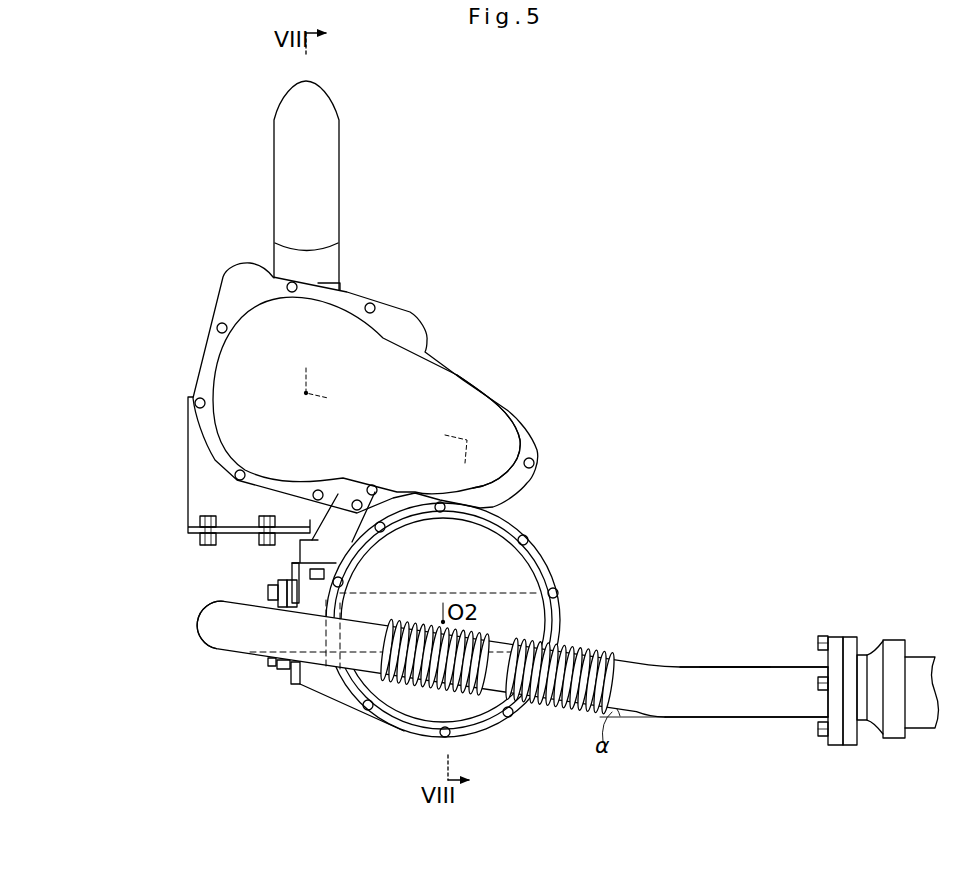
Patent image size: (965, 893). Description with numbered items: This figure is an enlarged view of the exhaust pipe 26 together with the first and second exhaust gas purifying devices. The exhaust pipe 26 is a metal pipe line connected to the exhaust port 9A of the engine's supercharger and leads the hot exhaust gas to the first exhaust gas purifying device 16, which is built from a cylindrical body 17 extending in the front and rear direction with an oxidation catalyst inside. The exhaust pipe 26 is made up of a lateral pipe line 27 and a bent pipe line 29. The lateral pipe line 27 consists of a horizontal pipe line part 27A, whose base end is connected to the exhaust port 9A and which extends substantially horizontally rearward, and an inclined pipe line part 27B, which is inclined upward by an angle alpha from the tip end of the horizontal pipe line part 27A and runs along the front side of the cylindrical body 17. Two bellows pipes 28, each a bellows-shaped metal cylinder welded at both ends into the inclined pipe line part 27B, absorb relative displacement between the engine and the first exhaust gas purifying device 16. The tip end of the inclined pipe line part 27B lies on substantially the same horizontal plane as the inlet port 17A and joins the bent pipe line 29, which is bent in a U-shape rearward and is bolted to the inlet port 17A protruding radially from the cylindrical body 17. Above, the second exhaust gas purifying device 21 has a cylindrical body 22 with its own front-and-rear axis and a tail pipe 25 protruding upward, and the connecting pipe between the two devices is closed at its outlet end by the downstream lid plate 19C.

The exhaust port 9A is at (850, 703).
The first exhaust gas purifying device 16 is at (487, 555).
The cylindrical body 17 is at (515, 613).
The inlet port 17A is at (310, 603).
The downstream lid plate 19C is at (477, 422).
The second exhaust gas purifying device 21 is at (262, 355).
The cylindrical body 22 is at (280, 443).
The tail pipe 25 is at (308, 165).
The exhaust pipe 26 is at (733, 662).
The lateral pipe line 27 is at (690, 683).
The horizontal pipe line part 27A is at (715, 697).
The inclined pipe line part 27B is at (313, 652).
The bellows pipe 28 is at (413, 678).
The bent pipe line 29 is at (263, 600).